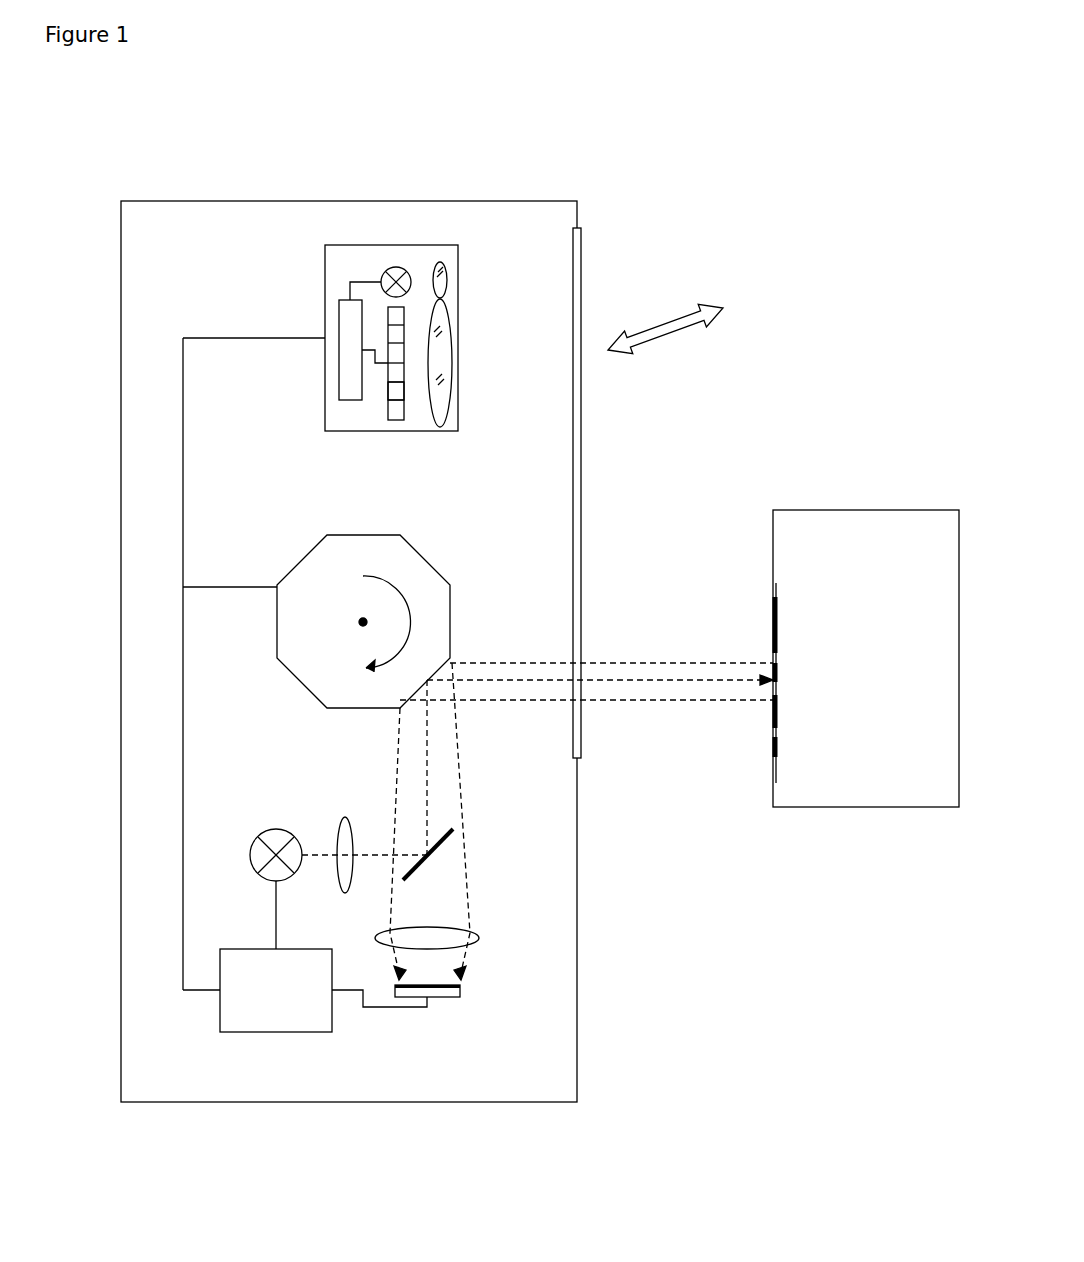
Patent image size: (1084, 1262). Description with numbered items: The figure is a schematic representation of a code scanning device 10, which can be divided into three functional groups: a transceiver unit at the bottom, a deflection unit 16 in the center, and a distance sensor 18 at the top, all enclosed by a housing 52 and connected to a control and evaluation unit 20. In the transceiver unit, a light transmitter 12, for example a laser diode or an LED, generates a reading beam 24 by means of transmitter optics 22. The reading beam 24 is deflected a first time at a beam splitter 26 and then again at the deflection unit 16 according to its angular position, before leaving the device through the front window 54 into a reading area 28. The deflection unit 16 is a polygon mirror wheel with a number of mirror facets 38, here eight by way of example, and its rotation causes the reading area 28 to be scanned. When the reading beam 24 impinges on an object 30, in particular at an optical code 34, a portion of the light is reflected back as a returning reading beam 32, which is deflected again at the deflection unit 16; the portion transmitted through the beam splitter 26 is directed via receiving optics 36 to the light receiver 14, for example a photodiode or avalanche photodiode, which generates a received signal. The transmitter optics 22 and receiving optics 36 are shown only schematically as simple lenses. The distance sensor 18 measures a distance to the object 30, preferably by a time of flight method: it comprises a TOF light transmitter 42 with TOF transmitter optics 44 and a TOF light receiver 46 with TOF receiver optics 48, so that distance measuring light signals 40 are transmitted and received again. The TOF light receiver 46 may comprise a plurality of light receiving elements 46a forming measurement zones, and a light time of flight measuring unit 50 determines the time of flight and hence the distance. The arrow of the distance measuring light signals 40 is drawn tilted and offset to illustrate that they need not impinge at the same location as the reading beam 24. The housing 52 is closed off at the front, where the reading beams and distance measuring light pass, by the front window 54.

The code scanning device 10 is at (530, 143).
The light transmitter 12 is at (276, 855).
The light receiver 14 is at (435, 997).
The deflection unit 16 is at (323, 652).
The distance sensor 18 is at (325, 400).
The control and evaluation unit 20 is at (255, 1005).
The transmitter optics 22 is at (340, 870).
The reading beam 24 is at (688, 680).
The beam splitter 26 is at (440, 850).
The reading area 28 is at (740, 537).
The object 30 is at (898, 560).
The returning reading beam 32 is at (608, 655).
The optical code 34 is at (773, 615).
The receiving optics 36 is at (455, 930).
The mirror facets 38 is at (450, 630).
The distance measuring light signals 40 is at (655, 330).
The TOF light transmitter 42 is at (396, 282).
The TOF transmitter optics 44 is at (445, 288).
The TOF light receiver 46 is at (404, 420).
The light receiving elements 46a is at (392, 395).
The TOF receiver optics 48 is at (445, 365).
The light time of flight measuring unit 50 is at (350, 314).
The housing 52 is at (577, 1023).
The front window 54 is at (580, 257).